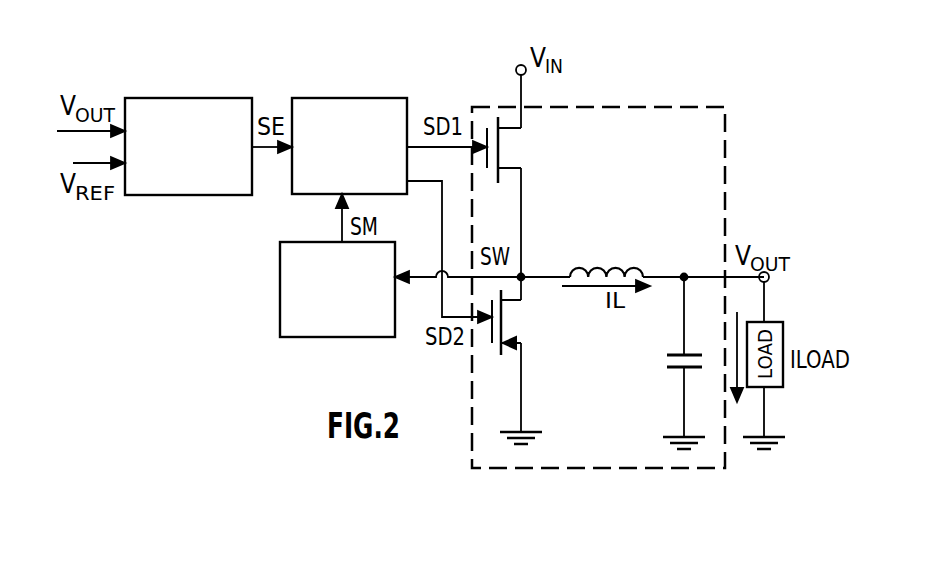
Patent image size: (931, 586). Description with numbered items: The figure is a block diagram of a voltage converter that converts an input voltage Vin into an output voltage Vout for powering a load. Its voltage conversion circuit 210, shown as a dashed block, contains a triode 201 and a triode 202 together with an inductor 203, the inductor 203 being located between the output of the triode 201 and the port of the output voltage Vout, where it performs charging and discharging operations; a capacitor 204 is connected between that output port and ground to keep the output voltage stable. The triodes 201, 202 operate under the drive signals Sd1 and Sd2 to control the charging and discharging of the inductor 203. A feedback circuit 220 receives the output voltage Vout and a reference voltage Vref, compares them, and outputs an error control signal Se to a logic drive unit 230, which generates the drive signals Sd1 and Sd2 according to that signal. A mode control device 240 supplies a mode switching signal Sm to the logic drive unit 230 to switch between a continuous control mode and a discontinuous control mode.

The triode 201 is at (500, 134).
The triode 202 is at (503, 306).
The inductor 203 is at (613, 268).
The capacitor 204 is at (674, 372).
The voltage conversion circuit 210 is at (610, 107).
The feedback circuit 220 is at (190, 98).
The logic drive unit 230 is at (351, 98).
The mode control device 240 is at (280, 262).